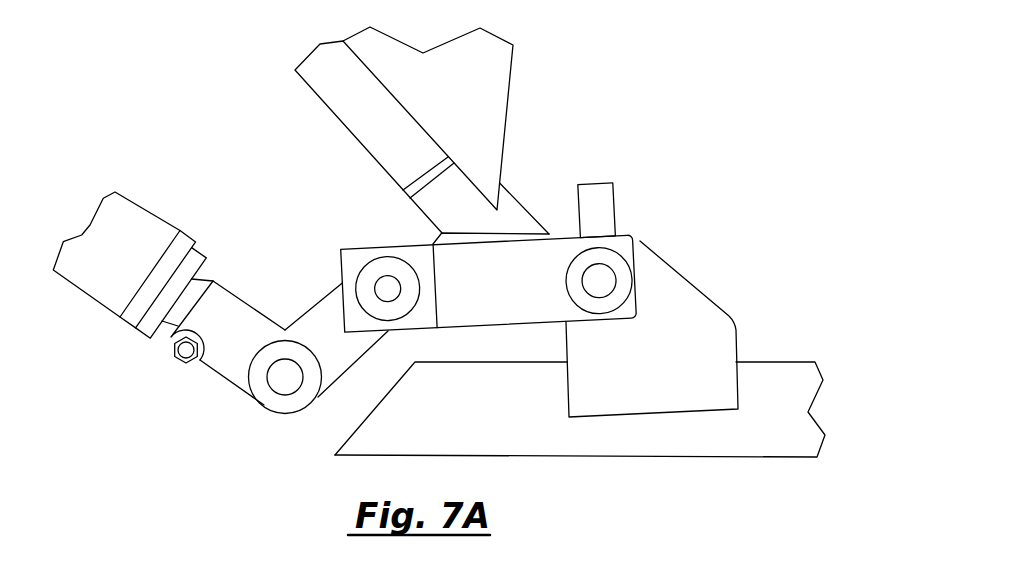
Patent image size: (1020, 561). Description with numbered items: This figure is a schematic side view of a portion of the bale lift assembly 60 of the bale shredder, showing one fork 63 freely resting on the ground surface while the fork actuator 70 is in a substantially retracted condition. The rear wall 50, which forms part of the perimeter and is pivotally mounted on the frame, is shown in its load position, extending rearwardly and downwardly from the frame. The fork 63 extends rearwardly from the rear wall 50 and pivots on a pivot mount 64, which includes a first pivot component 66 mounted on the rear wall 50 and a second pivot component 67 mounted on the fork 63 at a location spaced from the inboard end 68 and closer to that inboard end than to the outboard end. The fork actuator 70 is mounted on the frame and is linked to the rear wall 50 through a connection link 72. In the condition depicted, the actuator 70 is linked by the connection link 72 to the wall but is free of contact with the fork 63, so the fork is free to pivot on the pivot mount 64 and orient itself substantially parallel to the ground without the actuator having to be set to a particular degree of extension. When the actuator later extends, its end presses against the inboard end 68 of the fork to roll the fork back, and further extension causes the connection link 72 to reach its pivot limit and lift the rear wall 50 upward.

The rear wall 50 is at (485, 107).
The bale lift assembly 60 is at (640, 165).
The fork 63 is at (773, 362).
The pivot mount 64 is at (656, 241).
The first pivot component 66 is at (518, 303).
The second pivot component 67 is at (685, 312).
The inboard end 68 is at (395, 428).
The fork actuator 70 is at (247, 375).
The connection link 72 is at (333, 310).